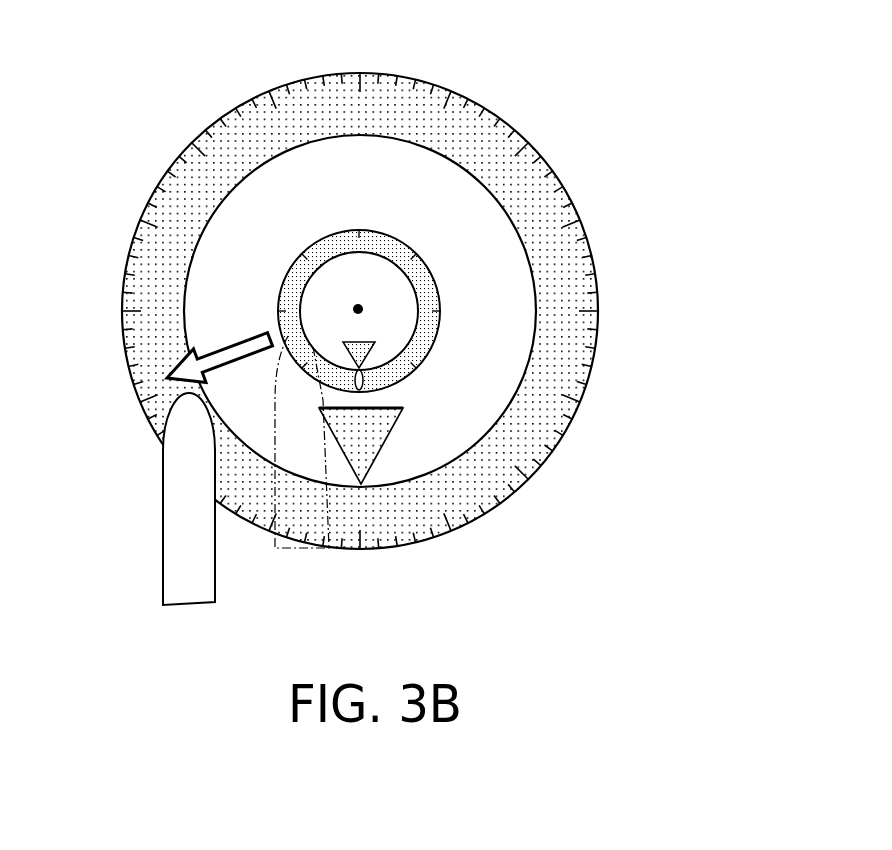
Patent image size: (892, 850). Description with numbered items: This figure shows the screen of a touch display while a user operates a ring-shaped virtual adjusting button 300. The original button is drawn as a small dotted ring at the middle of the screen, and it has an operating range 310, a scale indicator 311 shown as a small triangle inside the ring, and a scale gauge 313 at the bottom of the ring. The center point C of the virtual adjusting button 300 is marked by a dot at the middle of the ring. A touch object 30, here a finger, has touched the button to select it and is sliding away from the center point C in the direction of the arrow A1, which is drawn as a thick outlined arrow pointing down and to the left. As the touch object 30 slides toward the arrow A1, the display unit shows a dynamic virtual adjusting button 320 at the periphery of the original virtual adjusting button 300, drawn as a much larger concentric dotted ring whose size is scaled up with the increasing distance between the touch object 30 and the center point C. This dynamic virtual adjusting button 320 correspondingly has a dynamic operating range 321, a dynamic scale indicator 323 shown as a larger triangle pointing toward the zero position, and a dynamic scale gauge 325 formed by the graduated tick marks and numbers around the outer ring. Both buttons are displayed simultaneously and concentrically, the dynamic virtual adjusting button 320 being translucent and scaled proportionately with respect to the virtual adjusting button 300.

The virtual adjusting button 300 is at (447, 289).
The operating range 310 is at (434, 338).
The scale indicator 311 is at (375, 342).
The scale gauge 313 is at (361, 391).
The dynamic virtual adjusting button 320 is at (404, 332).
The dynamic operating range 321 is at (404, 355).
The dynamic scale indicator 323 is at (370, 431).
The dynamic scale gauge 325 is at (359, 527).
The touch object 30 is at (173, 578).
The arrow A1 is at (226, 340).
The center point C is at (359, 306).